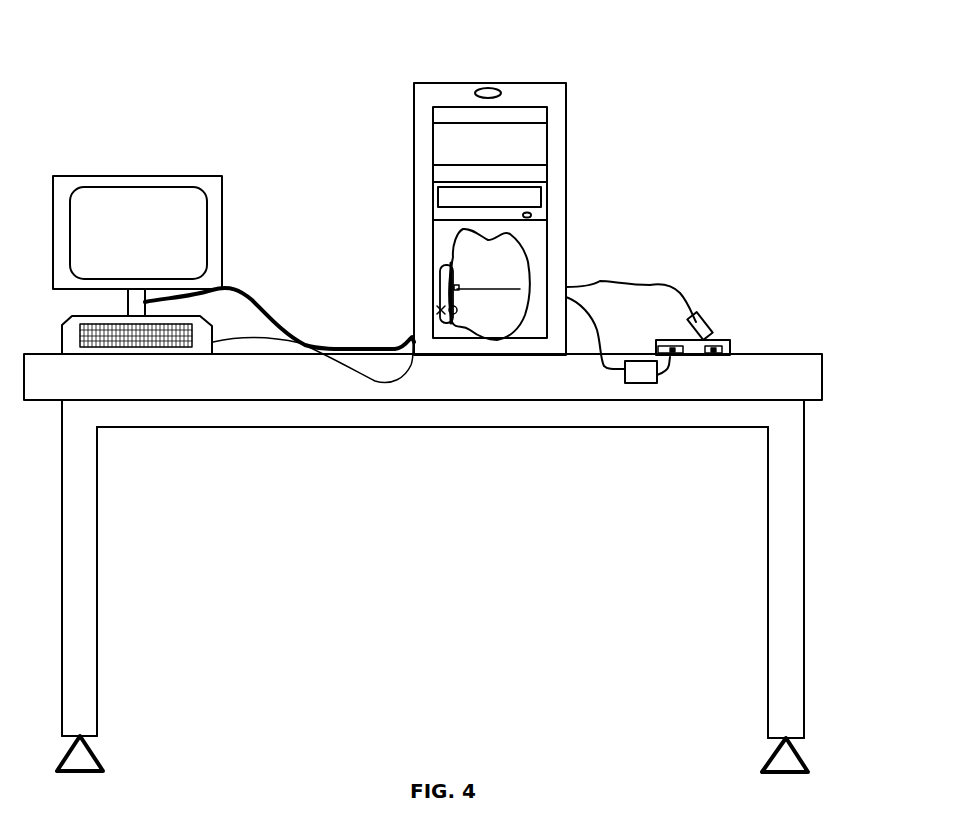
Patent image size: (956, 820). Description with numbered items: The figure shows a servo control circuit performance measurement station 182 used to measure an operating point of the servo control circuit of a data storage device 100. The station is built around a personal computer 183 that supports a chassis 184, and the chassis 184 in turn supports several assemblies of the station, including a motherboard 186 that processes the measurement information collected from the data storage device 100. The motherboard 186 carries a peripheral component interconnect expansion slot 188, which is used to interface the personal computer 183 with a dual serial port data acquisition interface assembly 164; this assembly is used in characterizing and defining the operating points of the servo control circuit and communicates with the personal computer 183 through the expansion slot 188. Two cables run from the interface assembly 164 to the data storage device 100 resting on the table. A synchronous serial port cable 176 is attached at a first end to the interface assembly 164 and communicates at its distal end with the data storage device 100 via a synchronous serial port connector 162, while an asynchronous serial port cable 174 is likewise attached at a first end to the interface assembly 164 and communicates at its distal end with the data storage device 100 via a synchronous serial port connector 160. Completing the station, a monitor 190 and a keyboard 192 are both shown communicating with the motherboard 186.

The data storage device 100 is at (812, 324).
The synchronous serial port connector 160 is at (677, 356).
The synchronous serial port connector 162 is at (719, 356).
The dual serial port data acquisition interface assembly 164 is at (497, 292).
The asynchronous serial port cable 174 is at (600, 341).
The synchronous serial port cable 176 is at (668, 283).
The servo control circuit performance measurement station 182 is at (328, 66).
The personal computer 183 is at (544, 74).
The chassis 184 is at (442, 312).
The motherboard 186 is at (441, 282).
The peripheral component interconnect (PCI) expansion slot 188 is at (459, 287).
The monitor 190 is at (222, 233).
The keyboard 192 is at (135, 354).